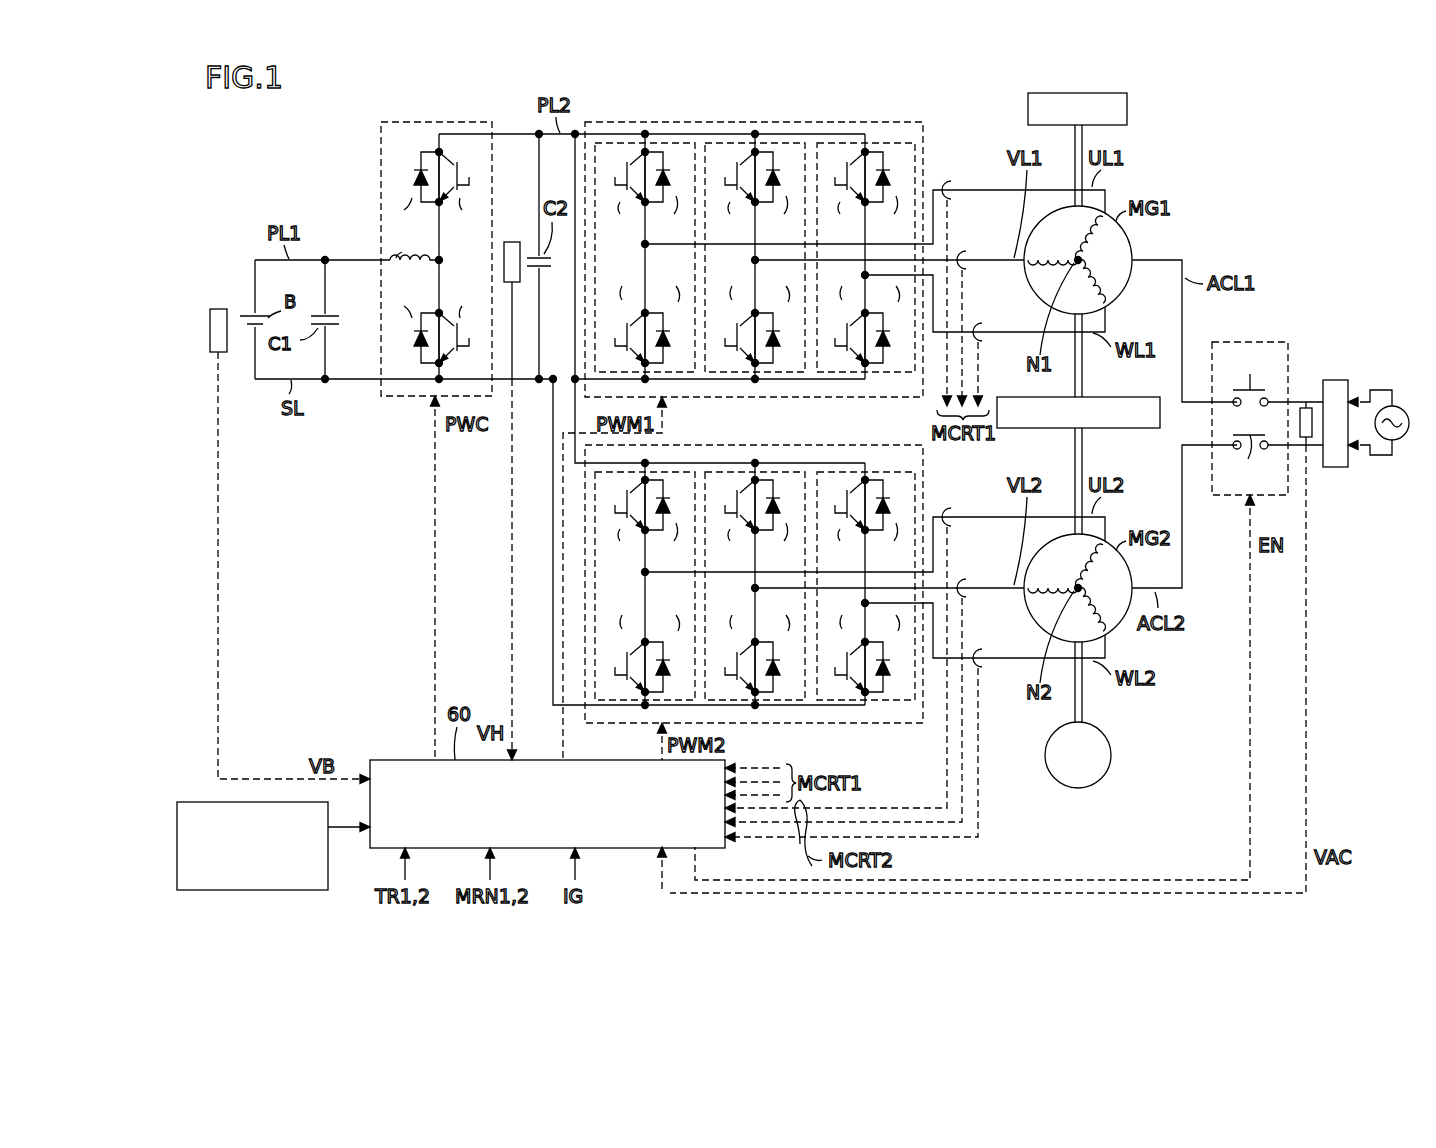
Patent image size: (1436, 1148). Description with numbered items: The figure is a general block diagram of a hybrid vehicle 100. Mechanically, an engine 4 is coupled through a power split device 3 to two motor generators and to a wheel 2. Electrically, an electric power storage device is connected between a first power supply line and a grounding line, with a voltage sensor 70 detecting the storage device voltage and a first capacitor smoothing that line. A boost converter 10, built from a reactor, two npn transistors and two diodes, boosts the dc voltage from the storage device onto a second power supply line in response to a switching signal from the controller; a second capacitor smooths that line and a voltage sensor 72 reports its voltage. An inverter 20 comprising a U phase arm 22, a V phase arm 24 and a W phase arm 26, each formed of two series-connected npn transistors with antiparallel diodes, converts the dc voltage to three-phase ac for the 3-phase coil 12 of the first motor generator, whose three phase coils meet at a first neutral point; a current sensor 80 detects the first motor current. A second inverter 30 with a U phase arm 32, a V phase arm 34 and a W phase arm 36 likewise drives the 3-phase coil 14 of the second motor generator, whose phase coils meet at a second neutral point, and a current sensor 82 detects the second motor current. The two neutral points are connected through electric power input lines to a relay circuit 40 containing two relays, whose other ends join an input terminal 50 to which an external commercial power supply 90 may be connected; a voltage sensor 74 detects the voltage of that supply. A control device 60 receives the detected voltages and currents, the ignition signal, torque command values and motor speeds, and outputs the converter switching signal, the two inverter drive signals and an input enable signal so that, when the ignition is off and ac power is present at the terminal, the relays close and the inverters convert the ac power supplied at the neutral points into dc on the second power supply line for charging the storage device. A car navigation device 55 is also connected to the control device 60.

The wheel 2 is at (1112, 757).
The power split device 3 is at (1116, 397).
The engine 4 is at (1128, 108).
The boost converter 10 is at (392, 400).
The 3-phase coil 12 is at (1086, 228).
The 3-phase coil 14 is at (1086, 556).
The inverter 20 is at (749, 259).
The U phase arm 22 is at (662, 143).
The V phase arm 24 is at (772, 143).
The W phase arm 26 is at (882, 143).
The inverter 30 is at (754, 585).
The U phase arm 32 is at (688, 463).
The V phase arm 34 is at (794, 463).
The W phase arm 36 is at (905, 463).
The relay circuit 40 is at (1260, 342).
The input terminal 50 is at (1336, 380).
The car navigation device 55 is at (192, 802).
The control device 60 is at (547, 804).
The voltage sensor 70 is at (218, 308).
The voltage sensor 72 is at (512, 240).
The voltage sensor 74 is at (1306, 408).
The current sensor 80 is at (949, 182).
The current sensor 82 is at (949, 510).
The commercial power supply 90 is at (1403, 448).
The hybrid vehicle 100 is at (1338, 121).